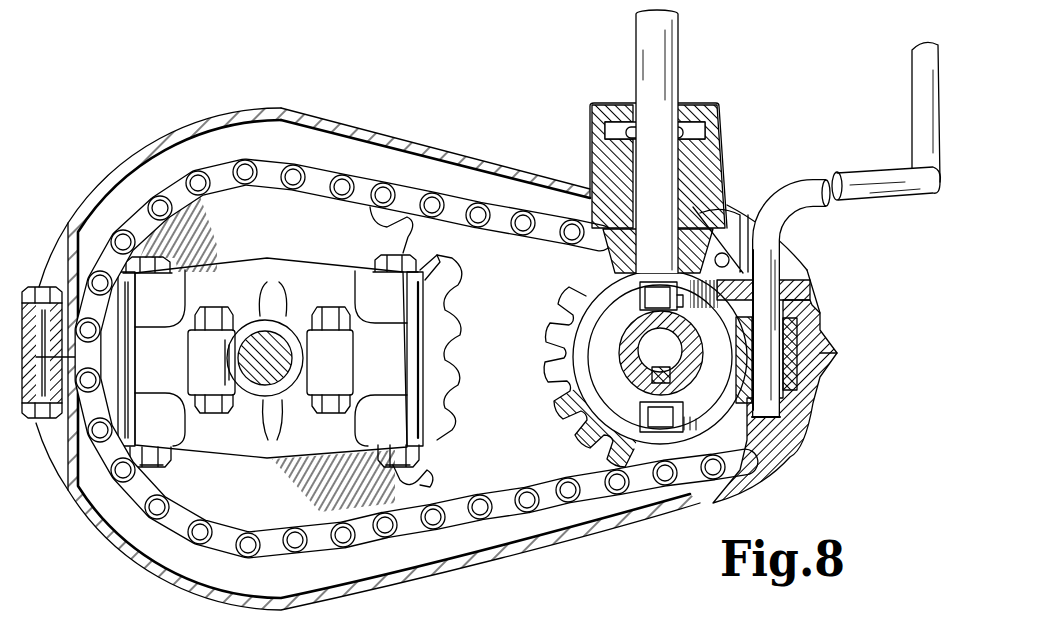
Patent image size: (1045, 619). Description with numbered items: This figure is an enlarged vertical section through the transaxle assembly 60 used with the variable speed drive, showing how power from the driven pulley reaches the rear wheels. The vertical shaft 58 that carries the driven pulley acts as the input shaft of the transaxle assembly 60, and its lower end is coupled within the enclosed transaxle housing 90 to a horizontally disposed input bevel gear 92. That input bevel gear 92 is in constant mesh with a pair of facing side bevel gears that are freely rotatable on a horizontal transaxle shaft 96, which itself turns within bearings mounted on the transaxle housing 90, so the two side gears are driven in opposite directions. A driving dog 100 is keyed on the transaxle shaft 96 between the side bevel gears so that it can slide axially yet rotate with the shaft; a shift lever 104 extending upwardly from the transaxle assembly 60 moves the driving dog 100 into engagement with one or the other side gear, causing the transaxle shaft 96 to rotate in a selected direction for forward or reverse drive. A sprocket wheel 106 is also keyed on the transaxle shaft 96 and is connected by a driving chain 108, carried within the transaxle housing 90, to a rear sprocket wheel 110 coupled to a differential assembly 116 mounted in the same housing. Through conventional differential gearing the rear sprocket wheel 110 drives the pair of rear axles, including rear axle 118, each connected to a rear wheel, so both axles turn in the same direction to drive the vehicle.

The vertical shaft 58 is at (678, 56).
The transaxle assembly 60 is at (413, 128).
The transaxle housing 90 is at (478, 158).
The input bevel gear 92 is at (735, 220).
The transaxle shaft 96 is at (647, 357).
The driving dog 100 is at (657, 297).
The shift lever 104 is at (783, 240).
The sprocket wheel 106 is at (560, 287).
The driving chain 108 is at (503, 226).
The rear sprocket wheel 110 is at (382, 233).
The differential assembly 116 is at (260, 470).
The rear axle 118 is at (258, 322).